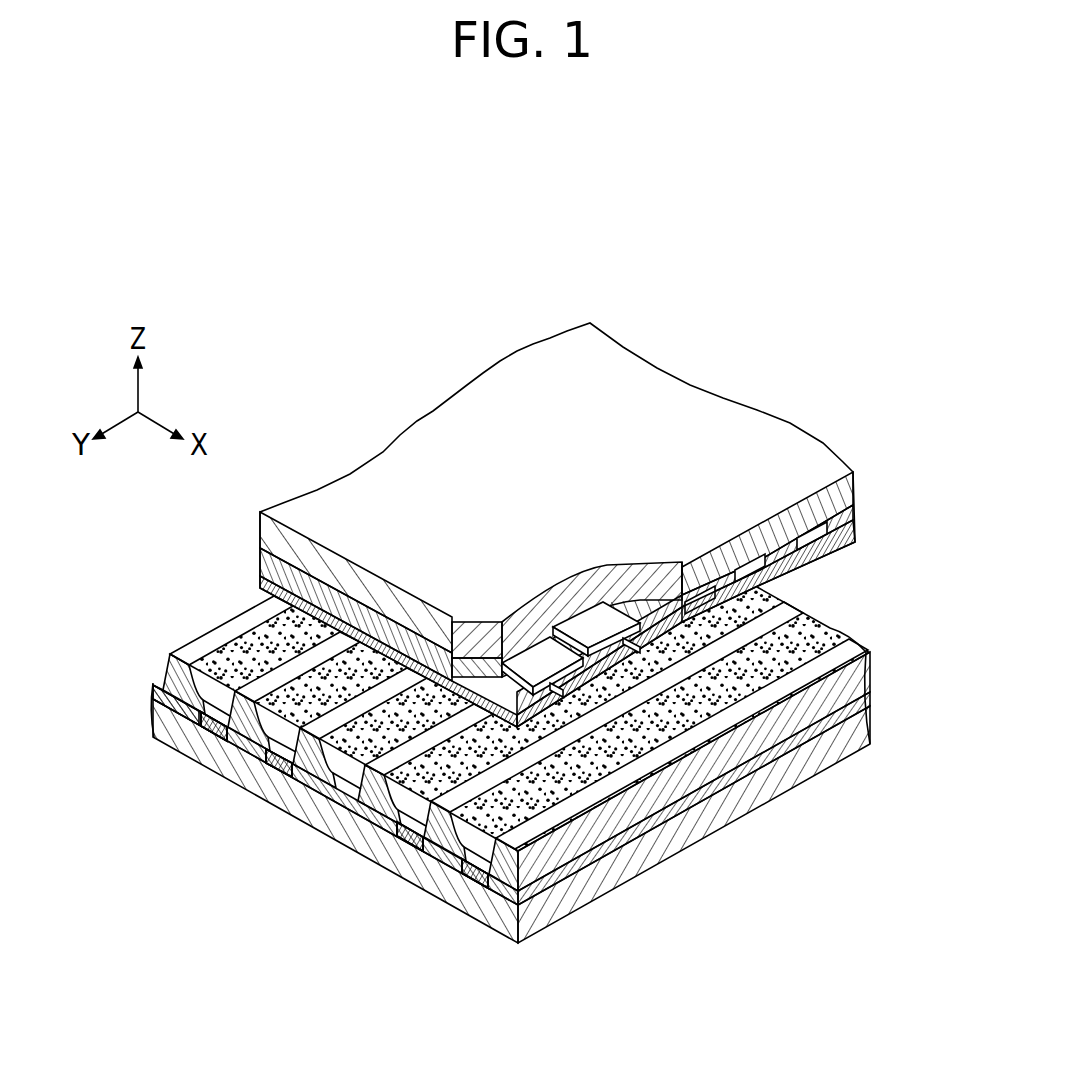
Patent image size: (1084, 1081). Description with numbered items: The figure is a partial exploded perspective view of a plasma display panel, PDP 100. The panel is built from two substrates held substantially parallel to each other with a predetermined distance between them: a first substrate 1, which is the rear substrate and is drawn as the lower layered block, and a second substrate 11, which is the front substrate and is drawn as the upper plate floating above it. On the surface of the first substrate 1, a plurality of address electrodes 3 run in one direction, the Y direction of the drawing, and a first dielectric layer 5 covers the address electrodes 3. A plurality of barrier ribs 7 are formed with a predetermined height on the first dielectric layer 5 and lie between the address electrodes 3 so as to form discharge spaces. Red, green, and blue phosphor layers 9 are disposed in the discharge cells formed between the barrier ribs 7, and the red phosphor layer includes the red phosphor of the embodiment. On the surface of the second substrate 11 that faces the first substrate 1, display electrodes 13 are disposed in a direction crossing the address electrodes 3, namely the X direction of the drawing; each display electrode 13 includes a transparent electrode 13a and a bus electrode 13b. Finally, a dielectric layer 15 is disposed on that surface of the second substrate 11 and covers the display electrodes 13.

The PDP 100 is at (702, 270).
The first substrate 1 is at (468, 896).
The address electrodes 3 is at (270, 773).
The first dielectric layer 5 is at (158, 690).
The barrier ribs 7 is at (357, 822).
The phosphor layers 9 is at (232, 658).
The second substrate 11 is at (748, 425).
The display electrodes 13 is at (584, 460).
The transparent electrodes 13a is at (538, 653).
The bus electrodes 13b is at (595, 620).
The dielectric layer 15 is at (850, 522).